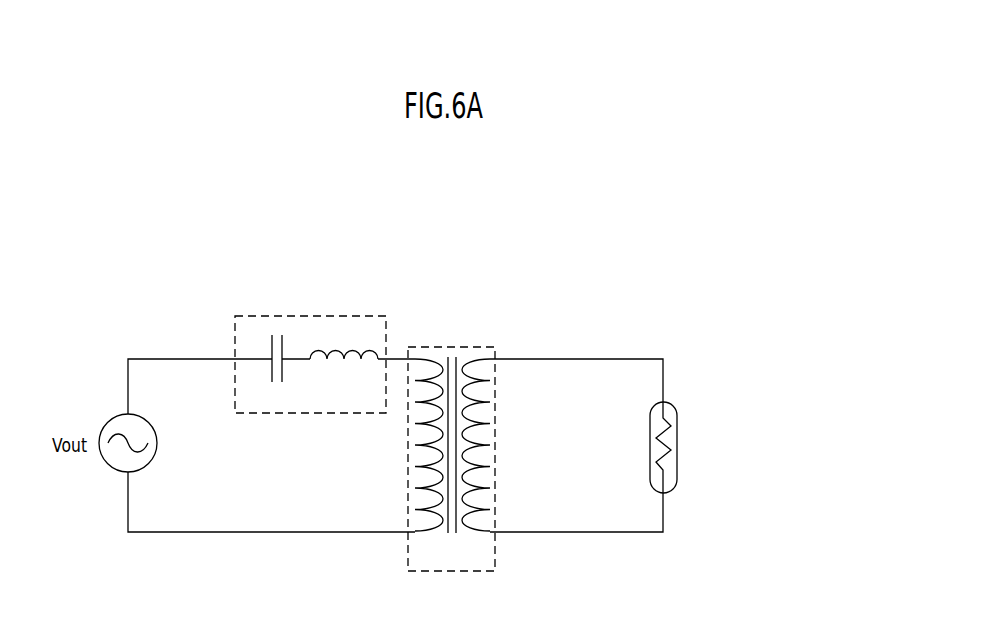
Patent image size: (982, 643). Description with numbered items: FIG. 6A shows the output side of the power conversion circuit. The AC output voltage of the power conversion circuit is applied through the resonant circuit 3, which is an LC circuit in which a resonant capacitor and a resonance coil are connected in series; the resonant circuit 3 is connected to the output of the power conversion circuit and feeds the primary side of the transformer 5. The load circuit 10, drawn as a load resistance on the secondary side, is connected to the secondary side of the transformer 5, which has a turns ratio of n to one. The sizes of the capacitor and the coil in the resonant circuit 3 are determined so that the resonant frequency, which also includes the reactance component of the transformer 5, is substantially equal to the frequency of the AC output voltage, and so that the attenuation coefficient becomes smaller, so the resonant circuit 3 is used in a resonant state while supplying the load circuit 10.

The resonant circuit 3 is at (376, 330).
The transformer 5 is at (488, 352).
The load circuit 10 is at (668, 410).